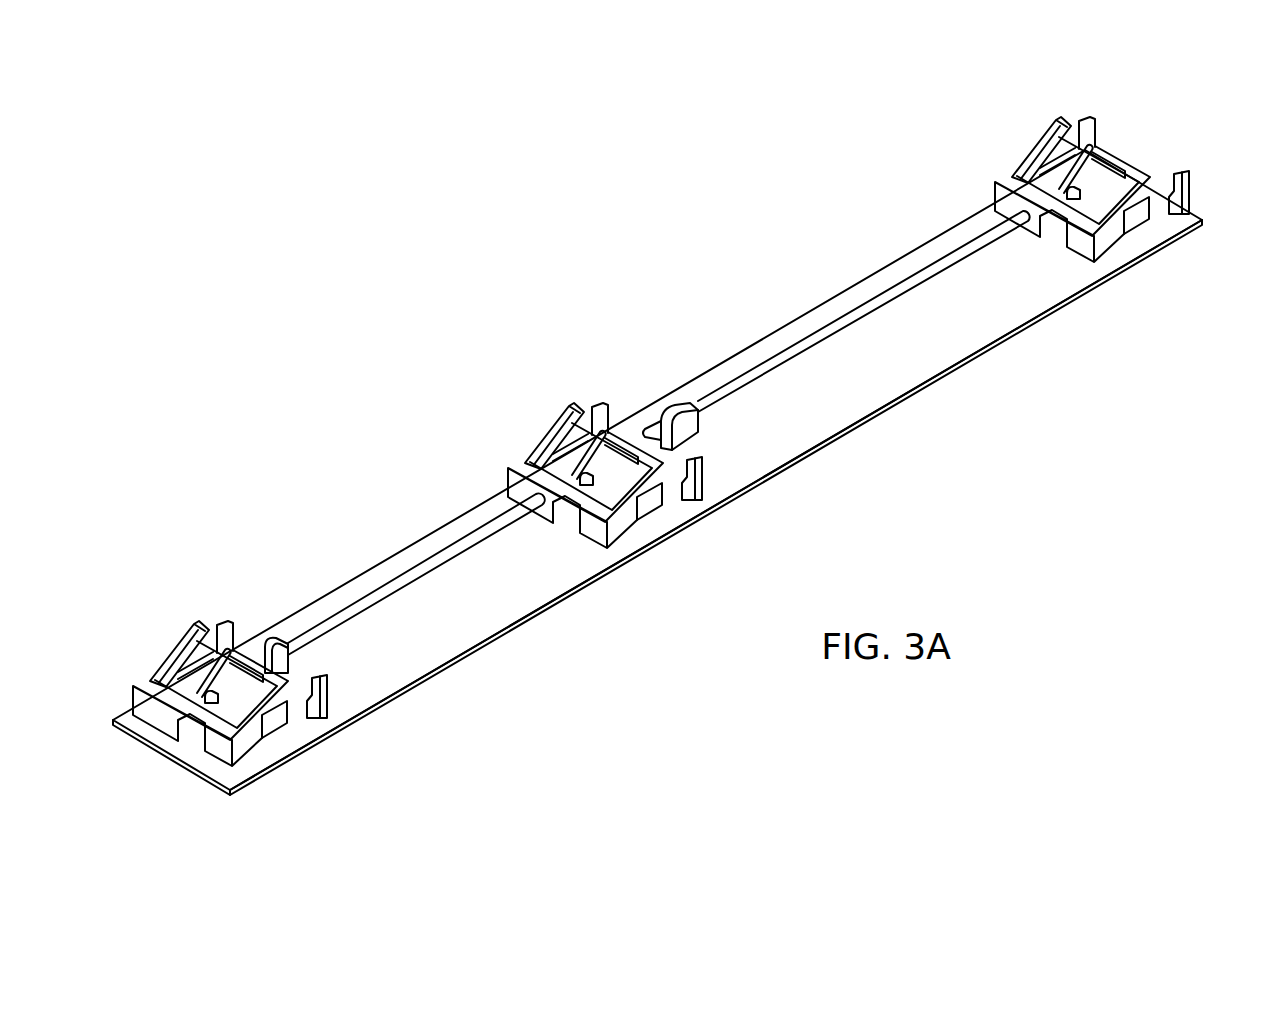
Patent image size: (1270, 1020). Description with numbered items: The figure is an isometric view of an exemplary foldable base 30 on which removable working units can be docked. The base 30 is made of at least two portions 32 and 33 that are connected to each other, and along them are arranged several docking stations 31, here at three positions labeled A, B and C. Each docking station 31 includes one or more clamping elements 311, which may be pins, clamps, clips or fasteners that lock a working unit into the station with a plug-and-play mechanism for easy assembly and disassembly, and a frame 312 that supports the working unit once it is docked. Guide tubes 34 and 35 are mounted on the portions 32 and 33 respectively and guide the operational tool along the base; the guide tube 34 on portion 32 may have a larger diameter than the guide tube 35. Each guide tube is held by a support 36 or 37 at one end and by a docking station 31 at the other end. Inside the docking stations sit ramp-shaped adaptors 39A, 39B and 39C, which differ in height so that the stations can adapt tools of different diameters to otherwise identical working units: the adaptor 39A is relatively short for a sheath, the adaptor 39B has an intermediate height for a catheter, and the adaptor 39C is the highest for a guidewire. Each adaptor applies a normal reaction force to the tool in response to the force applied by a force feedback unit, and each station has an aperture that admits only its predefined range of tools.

The foldable base 30 is at (501, 241).
The docking station 31 is at (248, 559).
The clamping element 311 is at (172, 652).
The frame 312 is at (259, 745).
The base portion 32 is at (497, 627).
The base portion 33 is at (878, 396).
The guide tube 34 is at (333, 616).
The guide tube 35 is at (790, 337).
The support 36 is at (268, 638).
The support 37 is at (673, 408).
The adaptor 39A is at (213, 704).
The adaptor 39B is at (590, 486).
The adaptor 39C is at (1077, 200).